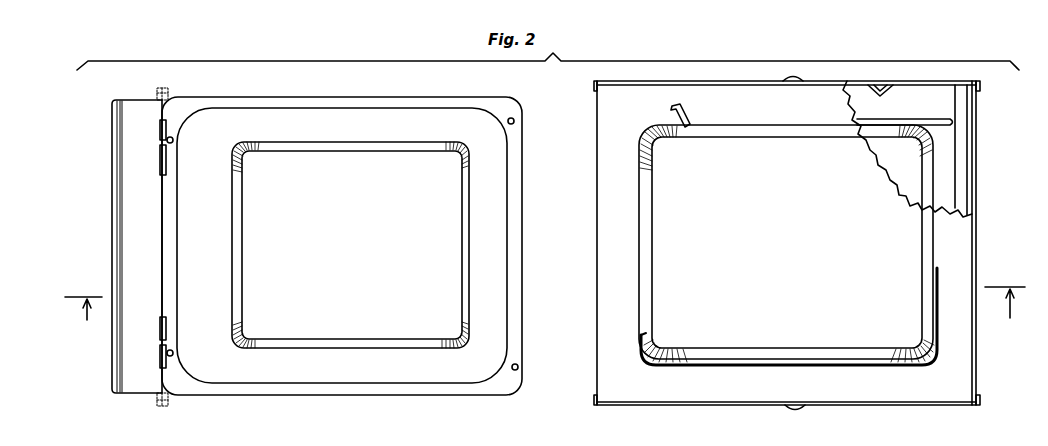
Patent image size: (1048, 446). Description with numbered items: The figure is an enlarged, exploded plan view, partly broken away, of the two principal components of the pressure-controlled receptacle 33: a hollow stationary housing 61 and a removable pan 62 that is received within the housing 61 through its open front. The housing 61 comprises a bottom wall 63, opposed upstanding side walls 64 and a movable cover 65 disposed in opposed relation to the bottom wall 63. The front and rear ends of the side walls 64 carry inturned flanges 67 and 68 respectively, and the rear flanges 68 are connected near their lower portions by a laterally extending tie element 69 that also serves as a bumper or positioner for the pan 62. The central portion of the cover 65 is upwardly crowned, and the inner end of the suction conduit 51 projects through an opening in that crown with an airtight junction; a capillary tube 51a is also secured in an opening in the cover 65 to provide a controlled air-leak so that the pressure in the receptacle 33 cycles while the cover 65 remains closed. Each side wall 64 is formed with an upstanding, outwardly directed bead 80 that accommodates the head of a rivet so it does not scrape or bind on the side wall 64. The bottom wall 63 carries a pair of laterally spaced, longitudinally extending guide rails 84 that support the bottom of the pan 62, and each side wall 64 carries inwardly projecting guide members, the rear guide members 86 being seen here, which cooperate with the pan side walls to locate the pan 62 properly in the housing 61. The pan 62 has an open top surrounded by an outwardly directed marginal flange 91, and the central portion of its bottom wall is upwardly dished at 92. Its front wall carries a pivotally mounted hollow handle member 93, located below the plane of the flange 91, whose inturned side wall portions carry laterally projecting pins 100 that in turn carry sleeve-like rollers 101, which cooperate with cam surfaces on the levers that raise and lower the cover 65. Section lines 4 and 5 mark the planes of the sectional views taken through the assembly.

The section line 4 is at (547, 294).
The section line 5 is at (547, 305).
The pressure-controlled receptacle 33 is at (544, 83).
The suction conduit 51 is at (686, 110).
The capillary tube 51a is at (639, 347).
The housing 61 is at (708, 412).
The pan 62 is at (310, 402).
The bottom wall 63 is at (930, 173).
The side walls 64 is at (743, 86).
The cover 65 is at (767, 248).
The front flanges 67 is at (596, 94).
The rear flanges 68 is at (979, 88).
The tie element 69 is at (962, 192).
The bead 80 is at (797, 412).
The guide rails 84 is at (901, 124).
The rear guide members 86 is at (887, 93).
The marginal flange 91 is at (172, 262).
The dished portion 92 is at (246, 288).
The handle member 93 is at (103, 240).
The pins 100 is at (165, 87).
The rollers 101 is at (155, 89).